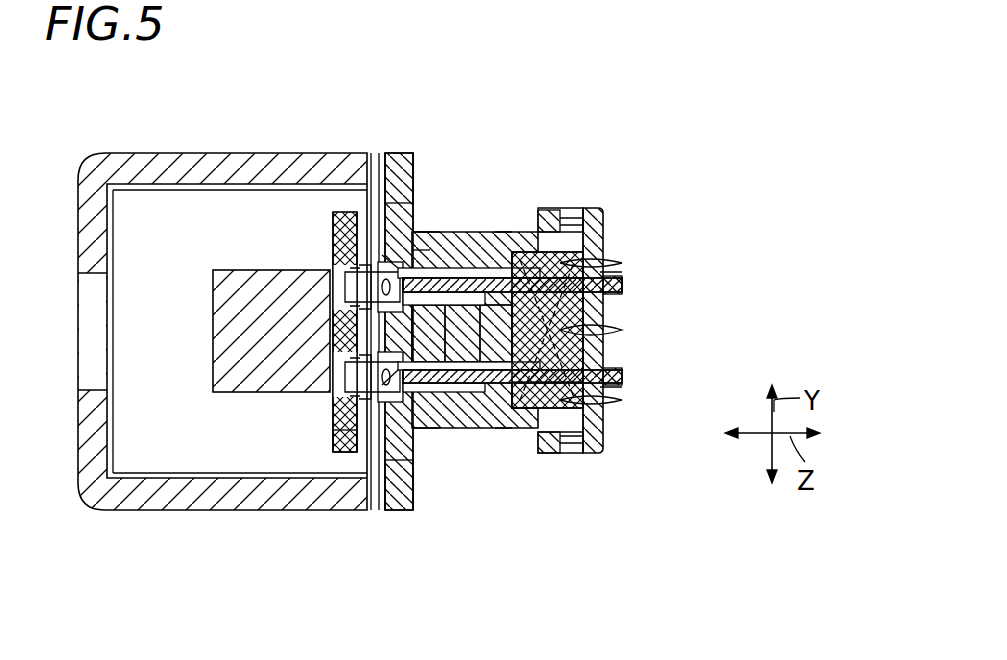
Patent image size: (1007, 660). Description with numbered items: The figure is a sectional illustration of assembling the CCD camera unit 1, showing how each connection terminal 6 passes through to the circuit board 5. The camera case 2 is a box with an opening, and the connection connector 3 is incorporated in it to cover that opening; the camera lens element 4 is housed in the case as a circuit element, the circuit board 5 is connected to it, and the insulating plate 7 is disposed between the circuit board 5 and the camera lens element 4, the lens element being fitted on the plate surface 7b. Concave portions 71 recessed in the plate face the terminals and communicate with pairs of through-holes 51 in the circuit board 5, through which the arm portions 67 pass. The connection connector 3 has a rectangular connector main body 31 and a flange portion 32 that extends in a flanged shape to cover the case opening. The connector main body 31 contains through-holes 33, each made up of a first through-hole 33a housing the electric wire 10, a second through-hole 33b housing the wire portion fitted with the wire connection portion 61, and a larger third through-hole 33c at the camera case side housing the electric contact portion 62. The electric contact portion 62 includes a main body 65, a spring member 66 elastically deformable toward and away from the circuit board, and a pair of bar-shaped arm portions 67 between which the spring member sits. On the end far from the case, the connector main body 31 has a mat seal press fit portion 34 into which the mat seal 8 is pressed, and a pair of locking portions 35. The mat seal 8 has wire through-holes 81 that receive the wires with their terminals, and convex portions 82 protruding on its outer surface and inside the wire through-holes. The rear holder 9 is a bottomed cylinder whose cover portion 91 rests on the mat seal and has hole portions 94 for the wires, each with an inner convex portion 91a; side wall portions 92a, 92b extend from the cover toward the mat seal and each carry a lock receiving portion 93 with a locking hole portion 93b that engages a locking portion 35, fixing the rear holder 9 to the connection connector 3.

The CCD camera unit 1 is at (648, 116).
The camera case 2 is at (178, 153).
The connection connector 3 is at (478, 127).
The camera lens element 4 is at (227, 268).
The circuit board 5 is at (372, 250).
The connection terminal 6 is at (645, 565).
The insulating plate 7 is at (340, 215).
The surface of the plate 7b is at (345, 452).
The mat seal 8 is at (525, 410).
The rear holder 9 is at (607, 215).
The electric wire 10 is at (625, 286).
The connector main body 31 is at (425, 245).
The flange portion 32 is at (424, 232).
The through-hole 33 is at (735, 545).
The first through-hole 33a is at (500, 262).
The second through-hole 33b is at (430, 242).
The third through-hole 33c is at (405, 178).
The mat seal press fit portion 34 is at (533, 252).
The locking portion 35 is at (572, 210).
The through-hole 51 is at (350, 276).
The wire connection portion 61 is at (412, 420).
The electric contact portion 62 is at (297, 80).
The main body 65 is at (386, 262).
The spring member 66 is at (378, 268).
The arm portion 67 is at (372, 262).
The concave portion 71 is at (335, 265).
The wire through-hole 81 is at (515, 252).
The convex portion 82 is at (624, 401).
The cover portion 91 is at (608, 228).
The convex portion 91a is at (624, 300).
The side wall portion 92a is at (548, 208).
The side wall portion 92b is at (548, 453).
The lock receiving portion 93 is at (560, 230).
The locking hole portion 93b is at (590, 212).
The hole portion 94 is at (600, 276).